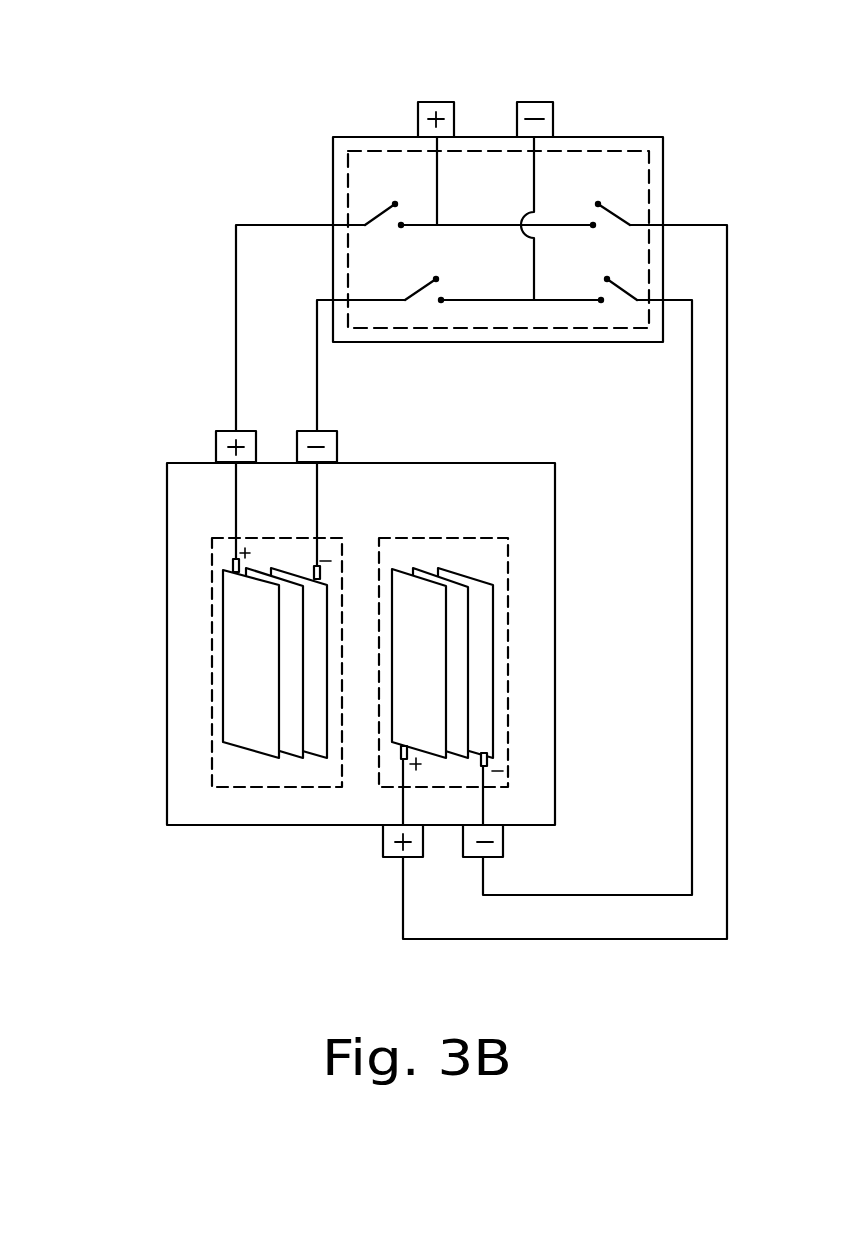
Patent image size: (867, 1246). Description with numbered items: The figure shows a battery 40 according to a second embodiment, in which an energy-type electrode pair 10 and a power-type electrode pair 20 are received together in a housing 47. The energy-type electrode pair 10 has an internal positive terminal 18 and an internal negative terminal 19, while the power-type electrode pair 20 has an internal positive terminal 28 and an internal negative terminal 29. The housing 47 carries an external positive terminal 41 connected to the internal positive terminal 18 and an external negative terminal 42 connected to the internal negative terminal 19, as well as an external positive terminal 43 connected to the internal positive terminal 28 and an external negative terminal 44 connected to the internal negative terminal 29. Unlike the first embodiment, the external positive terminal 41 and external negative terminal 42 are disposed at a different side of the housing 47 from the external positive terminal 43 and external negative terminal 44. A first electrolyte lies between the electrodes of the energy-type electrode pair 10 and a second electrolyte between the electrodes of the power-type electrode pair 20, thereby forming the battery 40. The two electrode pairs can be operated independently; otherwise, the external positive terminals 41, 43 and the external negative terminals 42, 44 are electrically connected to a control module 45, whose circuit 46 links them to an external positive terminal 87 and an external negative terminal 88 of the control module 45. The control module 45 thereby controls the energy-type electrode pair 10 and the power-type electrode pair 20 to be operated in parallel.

The energy-type electrode pair 10 is at (212, 600).
The internal positive terminal 18 is at (233, 563).
The internal negative terminal 19 is at (322, 573).
The power-type electrode pair 20 is at (508, 665).
The internal positive terminal 28 is at (400, 752).
The internal negative terminal 29 is at (487, 759).
The battery 40 is at (84, 420).
The external positive terminal 41 is at (225, 431).
The external negative terminal 42 is at (334, 431).
The external positive terminal 43 is at (392, 858).
The external negative terminal 44 is at (504, 842).
The control module 45 is at (663, 182).
The circuit 46 is at (600, 151).
The housing 47 is at (555, 554).
The external positive terminal 87 is at (434, 102).
The external negative terminal 88 is at (530, 102).